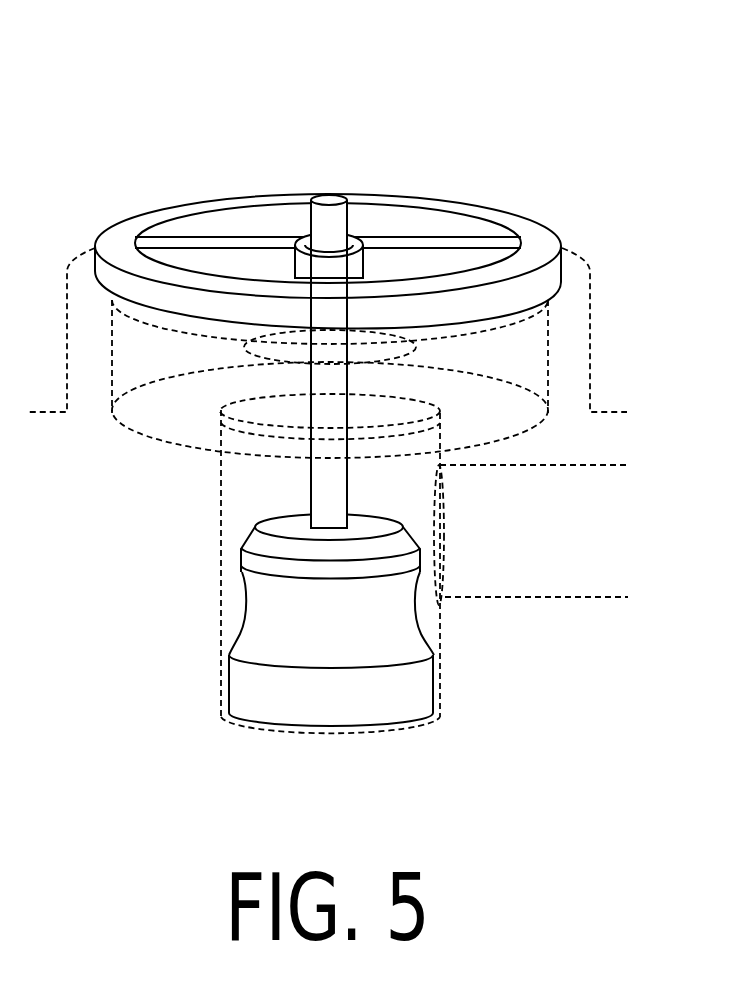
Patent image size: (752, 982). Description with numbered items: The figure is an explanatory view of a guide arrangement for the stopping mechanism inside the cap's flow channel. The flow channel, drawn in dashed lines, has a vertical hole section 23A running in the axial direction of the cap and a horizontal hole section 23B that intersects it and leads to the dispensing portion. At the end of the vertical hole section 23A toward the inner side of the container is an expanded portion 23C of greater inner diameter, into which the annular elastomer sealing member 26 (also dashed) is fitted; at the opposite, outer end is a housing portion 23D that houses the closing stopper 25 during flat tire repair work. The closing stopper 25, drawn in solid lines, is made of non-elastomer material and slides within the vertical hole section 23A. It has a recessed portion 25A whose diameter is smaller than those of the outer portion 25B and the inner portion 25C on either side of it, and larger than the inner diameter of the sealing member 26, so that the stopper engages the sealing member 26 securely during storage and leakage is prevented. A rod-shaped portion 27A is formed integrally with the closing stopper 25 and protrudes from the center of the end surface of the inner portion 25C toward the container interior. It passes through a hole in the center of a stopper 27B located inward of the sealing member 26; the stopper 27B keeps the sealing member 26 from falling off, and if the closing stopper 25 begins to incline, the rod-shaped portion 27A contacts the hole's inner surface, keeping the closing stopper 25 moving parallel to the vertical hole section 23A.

The vertical hole section 23A is at (427, 583).
The horizontal hole section 23B is at (550, 578).
The expanded portion 23C is at (548, 322).
The housing portion 23D is at (440, 717).
The closing stopper 25 is at (258, 636).
The recessed portion 25A is at (245, 599).
The outer portion 25B is at (240, 694).
The inner portion 25C is at (242, 550).
The sealing member 26 is at (523, 346).
The rod-shaped portion 27A is at (330, 218).
The stopper 27B is at (235, 203).